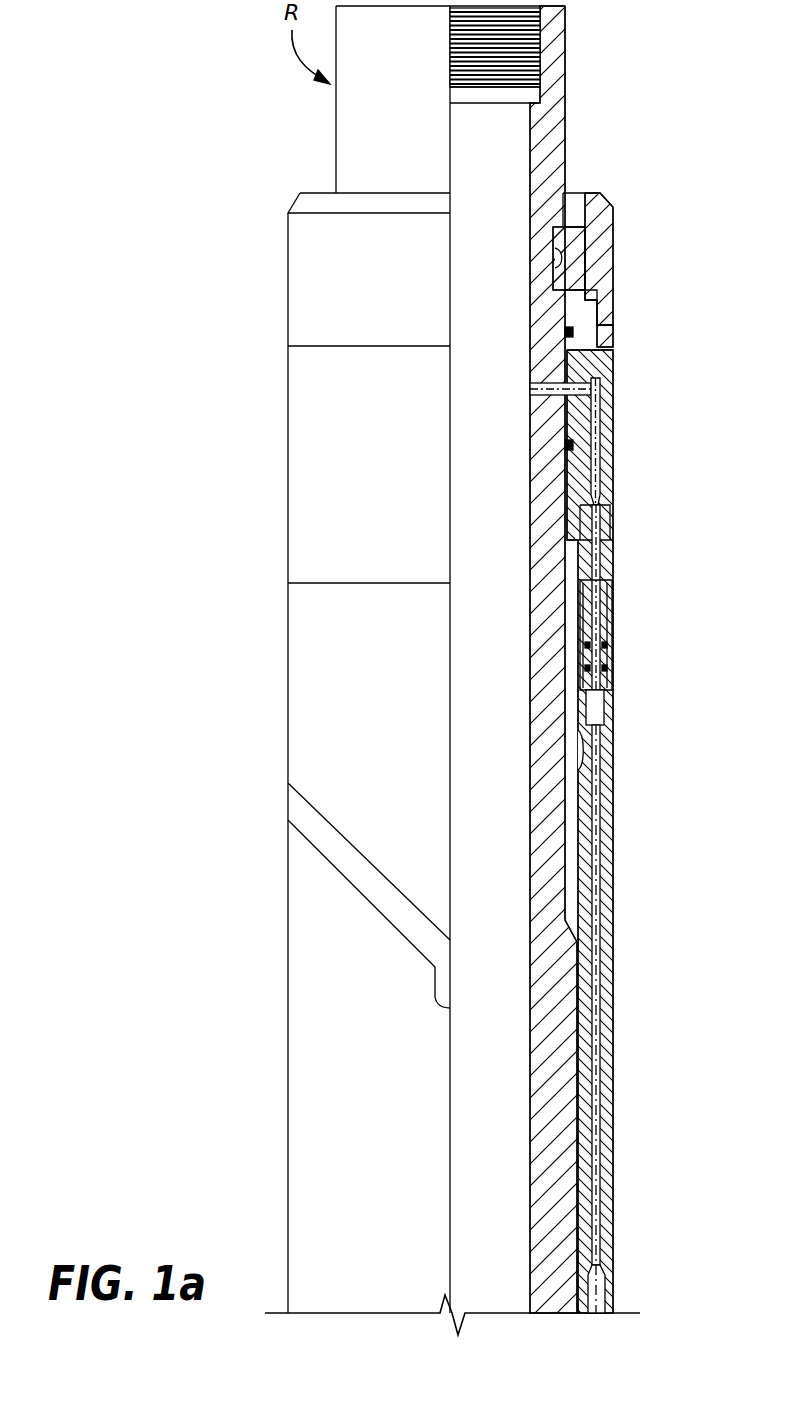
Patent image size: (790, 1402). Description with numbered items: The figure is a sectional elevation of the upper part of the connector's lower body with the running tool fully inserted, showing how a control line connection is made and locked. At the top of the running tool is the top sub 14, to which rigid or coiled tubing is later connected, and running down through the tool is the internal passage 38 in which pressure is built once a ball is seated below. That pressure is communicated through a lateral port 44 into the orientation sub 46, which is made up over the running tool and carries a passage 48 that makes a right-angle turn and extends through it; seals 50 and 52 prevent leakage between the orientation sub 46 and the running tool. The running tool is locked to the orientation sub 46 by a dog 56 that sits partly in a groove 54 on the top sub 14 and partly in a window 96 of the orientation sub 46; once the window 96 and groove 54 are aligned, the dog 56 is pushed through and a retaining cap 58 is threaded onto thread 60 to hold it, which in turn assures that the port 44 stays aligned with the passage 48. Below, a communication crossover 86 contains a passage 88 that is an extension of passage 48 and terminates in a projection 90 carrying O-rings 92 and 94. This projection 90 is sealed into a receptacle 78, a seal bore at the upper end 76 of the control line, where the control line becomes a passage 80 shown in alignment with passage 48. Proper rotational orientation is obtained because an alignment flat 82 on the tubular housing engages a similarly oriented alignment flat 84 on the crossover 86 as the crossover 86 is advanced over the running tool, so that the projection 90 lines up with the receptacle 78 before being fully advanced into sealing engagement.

The top sub 14 is at (540, 42).
The internal passage 38 is at (502, 510).
The lateral port 44 is at (536, 391).
The orientation sub 46 is at (613, 470).
The passage 48 is at (597, 427).
The seal 50 is at (565, 333).
The seal 52 is at (568, 447).
The groove 54 is at (558, 257).
The dog 56 is at (585, 251).
The retaining cap 58 is at (608, 212).
The thread 60 is at (604, 343).
The upper end 76 is at (606, 591).
The receptacle 78 is at (608, 606).
The passage 80 is at (598, 1138).
The alignment flat 82 is at (318, 852).
The alignment flat 84 is at (300, 797).
The communication crossover 86 is at (605, 557).
The passage 88 is at (593, 563).
The projection 90 is at (588, 692).
The O-ring 92 is at (610, 647).
The O-ring 94 is at (610, 670).
The window 96 is at (590, 293).